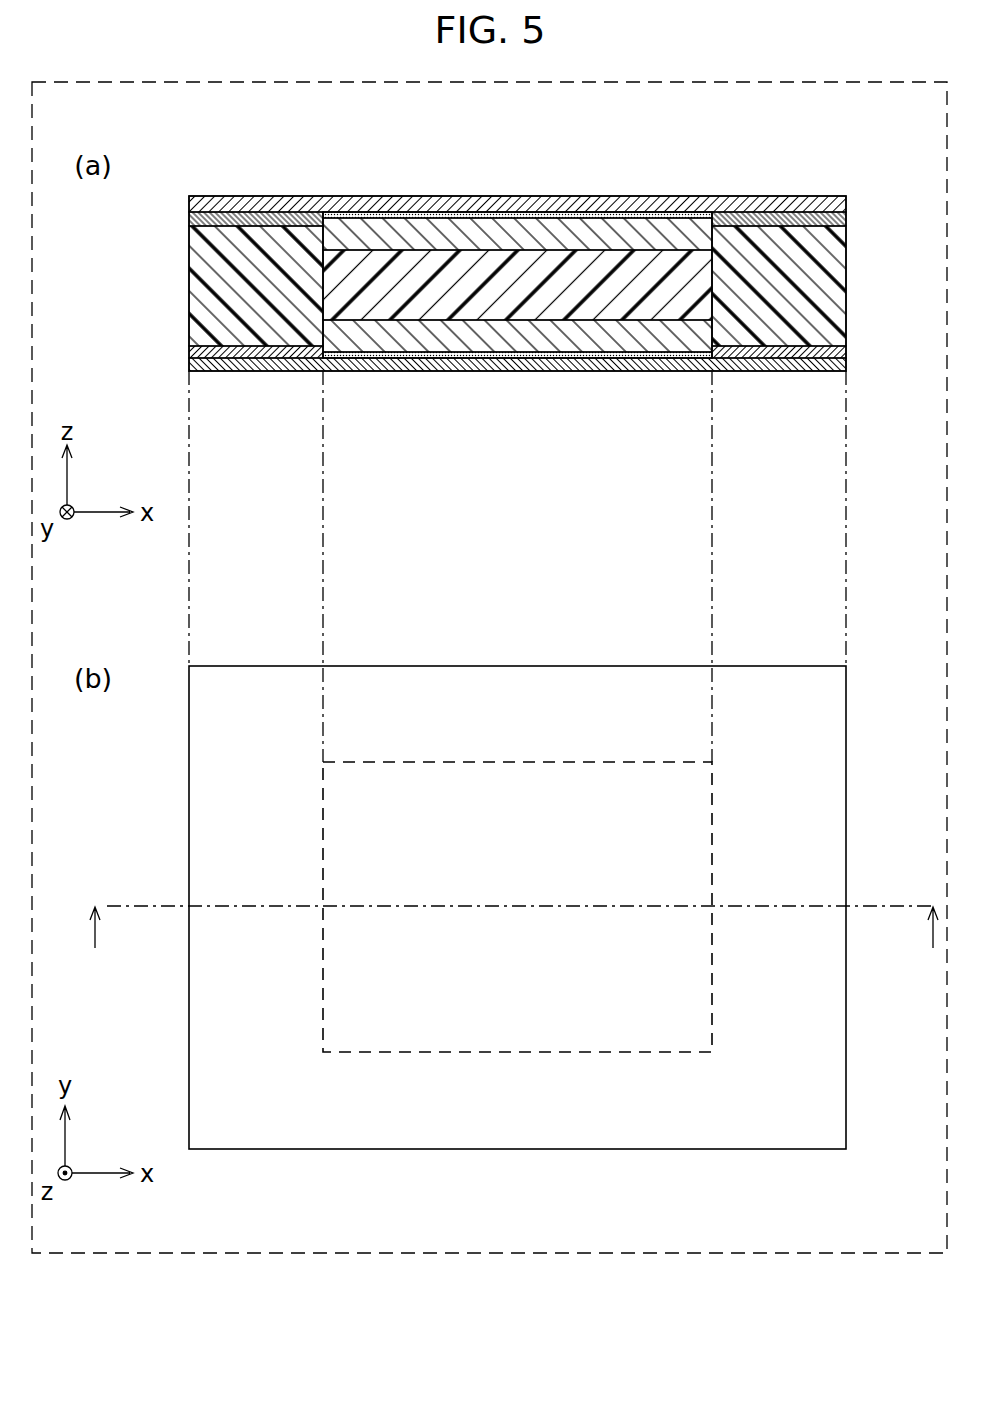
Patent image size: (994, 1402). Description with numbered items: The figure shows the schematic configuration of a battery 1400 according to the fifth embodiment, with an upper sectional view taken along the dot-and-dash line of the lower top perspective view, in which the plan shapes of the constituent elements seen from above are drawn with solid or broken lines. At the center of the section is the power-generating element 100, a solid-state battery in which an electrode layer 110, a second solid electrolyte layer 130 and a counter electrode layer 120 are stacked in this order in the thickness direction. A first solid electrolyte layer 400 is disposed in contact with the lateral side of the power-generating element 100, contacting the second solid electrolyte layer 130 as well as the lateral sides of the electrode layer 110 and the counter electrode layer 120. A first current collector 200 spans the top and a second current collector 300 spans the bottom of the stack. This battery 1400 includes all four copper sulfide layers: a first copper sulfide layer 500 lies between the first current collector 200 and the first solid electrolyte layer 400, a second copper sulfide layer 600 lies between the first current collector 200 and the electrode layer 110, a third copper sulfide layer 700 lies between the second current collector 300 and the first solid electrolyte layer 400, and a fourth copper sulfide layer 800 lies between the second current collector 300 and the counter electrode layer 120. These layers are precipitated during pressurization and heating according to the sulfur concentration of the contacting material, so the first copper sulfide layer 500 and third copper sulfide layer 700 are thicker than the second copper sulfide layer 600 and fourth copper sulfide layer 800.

The battery 1400 is at (487, 139).
The power-generating element 100 is at (618, 412).
The electrode layer 110 is at (403, 228).
The counter electrode layer 120 is at (565, 338).
The second solid electrolyte layer 130 is at (493, 300).
The first current collector 200 is at (622, 205).
The second current collector 300 is at (652, 365).
The first solid electrolyte layer 400 is at (205, 285).
The first copper sulfide layer 500 is at (270, 222).
The second copper sulfide layer 600 is at (405, 214).
The third copper sulfide layer 700 is at (260, 350).
The fourth copper sulfide layer 800 is at (358, 358).